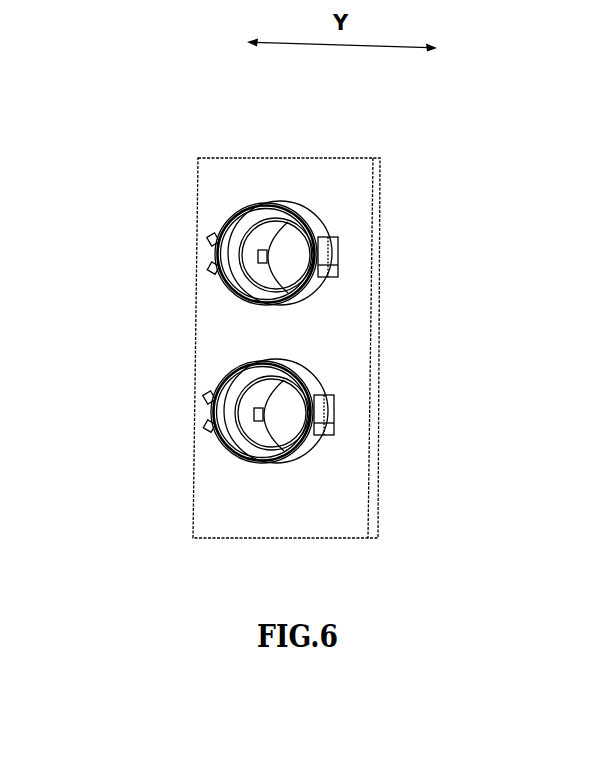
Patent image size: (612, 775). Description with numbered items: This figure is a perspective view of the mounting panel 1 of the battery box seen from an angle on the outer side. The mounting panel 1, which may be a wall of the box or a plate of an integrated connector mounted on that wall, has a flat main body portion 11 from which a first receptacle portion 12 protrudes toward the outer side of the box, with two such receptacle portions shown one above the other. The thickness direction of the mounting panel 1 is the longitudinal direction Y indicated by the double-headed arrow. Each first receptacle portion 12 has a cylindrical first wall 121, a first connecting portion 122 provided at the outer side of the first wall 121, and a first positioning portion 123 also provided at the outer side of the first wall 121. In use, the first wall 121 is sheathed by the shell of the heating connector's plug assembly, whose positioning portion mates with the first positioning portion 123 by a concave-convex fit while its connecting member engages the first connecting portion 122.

The mounting panel 1 is at (103, 157).
The main body portion 11 is at (220, 342).
The first receptacle portion 12 is at (420, 113).
The first wall 121 is at (311, 216).
The first connecting portion 122 is at (340, 256).
The first positioning portion 123 is at (229, 211).